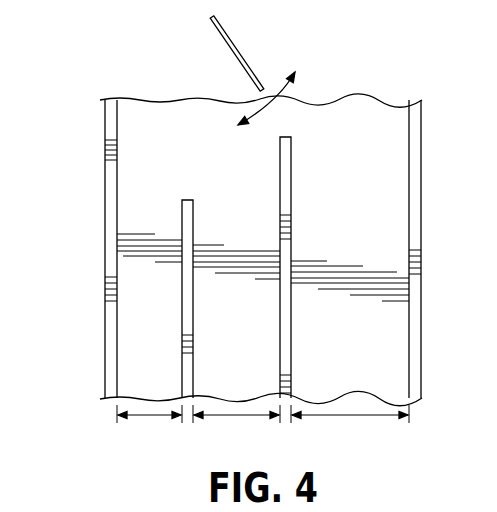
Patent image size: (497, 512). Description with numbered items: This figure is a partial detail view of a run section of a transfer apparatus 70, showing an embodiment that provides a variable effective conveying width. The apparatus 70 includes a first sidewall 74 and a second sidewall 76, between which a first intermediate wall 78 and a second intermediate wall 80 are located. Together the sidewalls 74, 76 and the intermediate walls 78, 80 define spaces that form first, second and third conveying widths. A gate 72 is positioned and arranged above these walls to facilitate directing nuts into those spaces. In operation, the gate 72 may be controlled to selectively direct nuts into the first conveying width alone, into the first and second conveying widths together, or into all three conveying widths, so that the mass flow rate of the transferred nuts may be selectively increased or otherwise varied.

The transfer apparatus 70 is at (92, 386).
The gate 72 is at (237, 40).
The first sidewall 74 is at (105, 212).
The second sidewall 76 is at (421, 181).
The first intermediate wall 78 is at (193, 214).
The second intermediate wall 80 is at (292, 181).